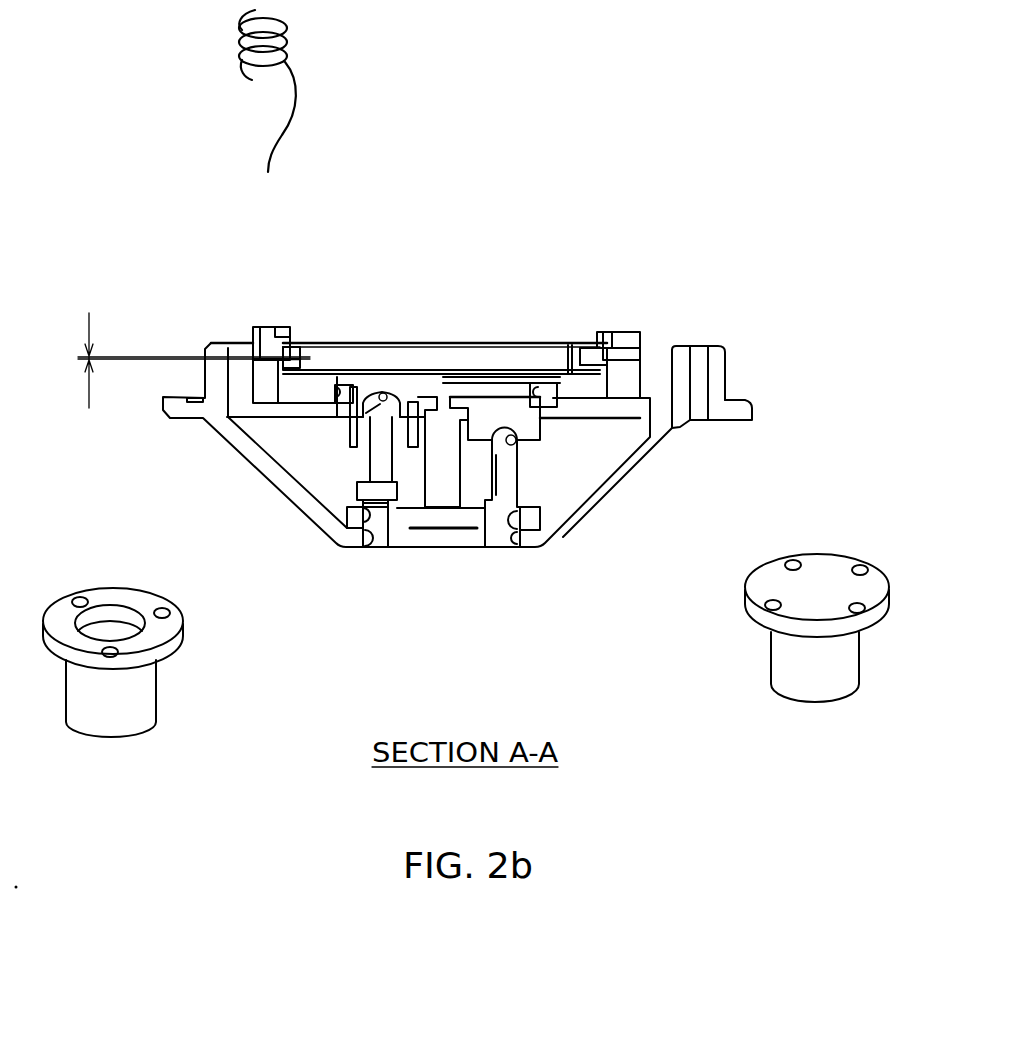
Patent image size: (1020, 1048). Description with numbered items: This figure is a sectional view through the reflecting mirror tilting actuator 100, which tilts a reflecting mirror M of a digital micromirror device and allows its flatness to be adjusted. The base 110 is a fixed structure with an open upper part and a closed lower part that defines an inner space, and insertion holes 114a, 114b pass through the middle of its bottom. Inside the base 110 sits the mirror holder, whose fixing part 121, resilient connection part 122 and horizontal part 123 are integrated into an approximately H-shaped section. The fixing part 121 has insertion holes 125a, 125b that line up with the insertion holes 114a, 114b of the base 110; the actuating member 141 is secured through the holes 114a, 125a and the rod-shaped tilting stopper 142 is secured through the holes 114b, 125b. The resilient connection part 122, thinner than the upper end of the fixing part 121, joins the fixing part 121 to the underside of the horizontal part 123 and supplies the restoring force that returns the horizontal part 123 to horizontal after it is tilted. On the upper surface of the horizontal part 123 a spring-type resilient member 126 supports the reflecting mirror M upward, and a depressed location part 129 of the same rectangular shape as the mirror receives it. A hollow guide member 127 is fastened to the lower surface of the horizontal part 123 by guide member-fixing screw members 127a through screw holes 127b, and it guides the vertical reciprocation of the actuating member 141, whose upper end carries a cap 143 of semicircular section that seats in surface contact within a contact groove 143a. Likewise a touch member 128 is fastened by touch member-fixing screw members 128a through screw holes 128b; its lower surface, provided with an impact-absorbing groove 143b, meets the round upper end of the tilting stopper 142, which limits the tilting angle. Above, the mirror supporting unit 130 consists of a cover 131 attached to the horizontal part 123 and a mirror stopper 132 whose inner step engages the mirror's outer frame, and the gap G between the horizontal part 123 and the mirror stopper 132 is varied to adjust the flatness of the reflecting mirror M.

The reflecting mirror tilting actuator 100 is at (688, 133).
The base 110 is at (808, 554).
The insertion hole 114a is at (377, 550).
The insertion hole 114b is at (509, 550).
The fixing part 121 is at (440, 513).
The resilient connection part 122 is at (443, 370).
The horizontal part 123 is at (630, 382).
The insertion hole 125a is at (352, 540).
The insertion hole 125b is at (541, 522).
The resilient member 126 is at (355, 372).
The hollow guide member 127 is at (337, 415).
The guide member-fixing screw member 127a is at (300, 352).
The screw hole 127b is at (273, 403).
The touch member 128 is at (535, 430).
The touch member-fixing screw member 128a is at (540, 378).
The screw hole 128b is at (503, 382).
The location part 129 is at (600, 340).
The mirror supporting unit 130 is at (782, 278).
The cover 131 is at (663, 345).
The mirror stopper 132 is at (695, 343).
The actuating member 141 is at (376, 452).
The tilting stopper 142 is at (510, 485).
The cap 143 is at (351, 445).
The contact groove 143a is at (385, 392).
The groove 143b is at (512, 448).
The reflecting mirror M is at (570, 362).
The gap G is at (78, 360).